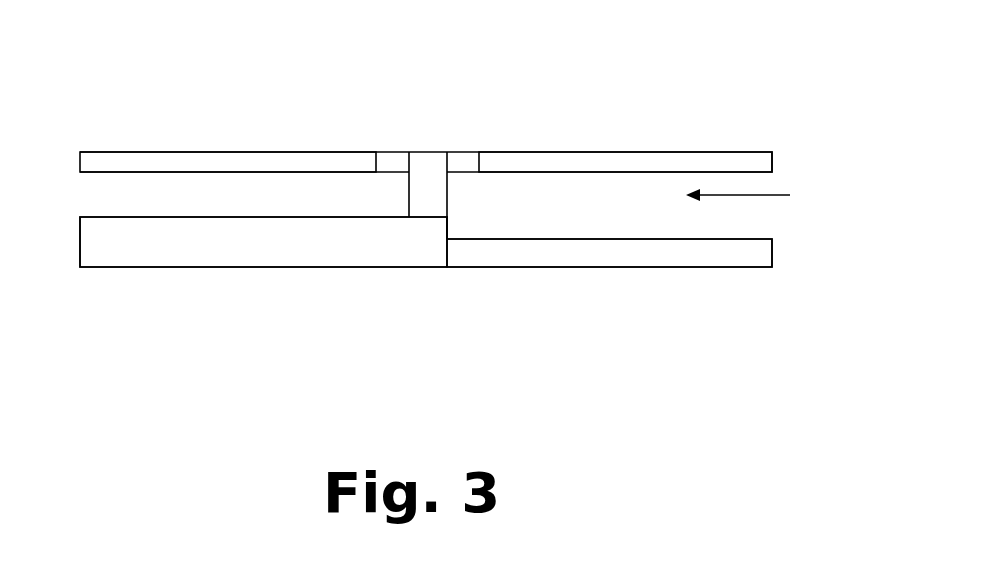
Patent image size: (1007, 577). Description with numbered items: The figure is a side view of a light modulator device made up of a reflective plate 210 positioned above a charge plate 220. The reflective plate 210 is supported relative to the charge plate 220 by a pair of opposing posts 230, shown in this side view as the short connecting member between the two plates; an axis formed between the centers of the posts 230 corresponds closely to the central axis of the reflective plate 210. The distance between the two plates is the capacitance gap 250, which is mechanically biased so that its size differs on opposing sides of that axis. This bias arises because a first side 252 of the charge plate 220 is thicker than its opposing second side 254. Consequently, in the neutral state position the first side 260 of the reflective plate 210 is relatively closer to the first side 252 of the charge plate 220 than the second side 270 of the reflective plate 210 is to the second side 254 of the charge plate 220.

The reflective plate 210 is at (355, 146).
The charge plate 220 is at (431, 275).
The posts 230 is at (428, 185).
The capacitance gap 250 is at (759, 196).
The first side of the charge plate 252 is at (253, 247).
The second side of the charge plate 254 is at (612, 249).
The first side of the reflective plate 260 is at (227, 152).
The second side of the reflective plate 270 is at (625, 152).